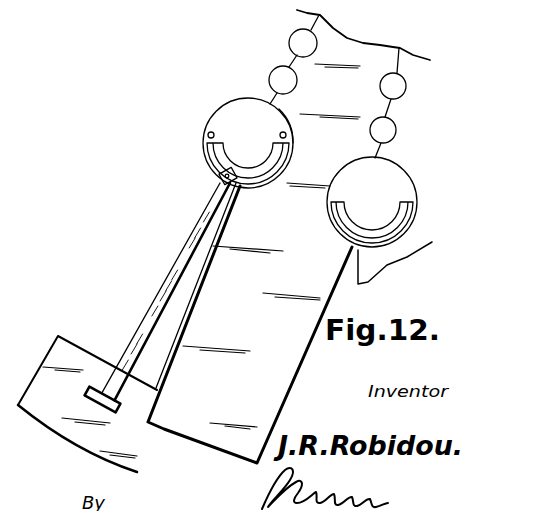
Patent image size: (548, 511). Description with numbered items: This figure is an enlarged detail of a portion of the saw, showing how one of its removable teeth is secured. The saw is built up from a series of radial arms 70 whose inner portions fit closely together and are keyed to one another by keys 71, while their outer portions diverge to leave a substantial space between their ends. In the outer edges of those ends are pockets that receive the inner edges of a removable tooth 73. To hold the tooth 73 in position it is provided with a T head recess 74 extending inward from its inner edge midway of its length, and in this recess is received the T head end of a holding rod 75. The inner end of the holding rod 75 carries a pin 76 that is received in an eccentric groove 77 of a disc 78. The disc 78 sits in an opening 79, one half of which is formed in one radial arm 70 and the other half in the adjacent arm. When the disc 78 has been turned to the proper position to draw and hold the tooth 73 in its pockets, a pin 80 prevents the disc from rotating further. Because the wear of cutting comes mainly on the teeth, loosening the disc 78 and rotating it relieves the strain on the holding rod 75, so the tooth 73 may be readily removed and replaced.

The radial arm 70 is at (295, 338).
The key 71 is at (300, 43).
The removable tooth 73 is at (63, 405).
The T head recess 74 is at (120, 410).
The holding rod 75 is at (148, 318).
The pin 76 is at (222, 175).
The eccentric groove 77 is at (210, 157).
The disc 78 is at (238, 115).
The opening 79 is at (288, 118).
The pin 80 is at (210, 128).